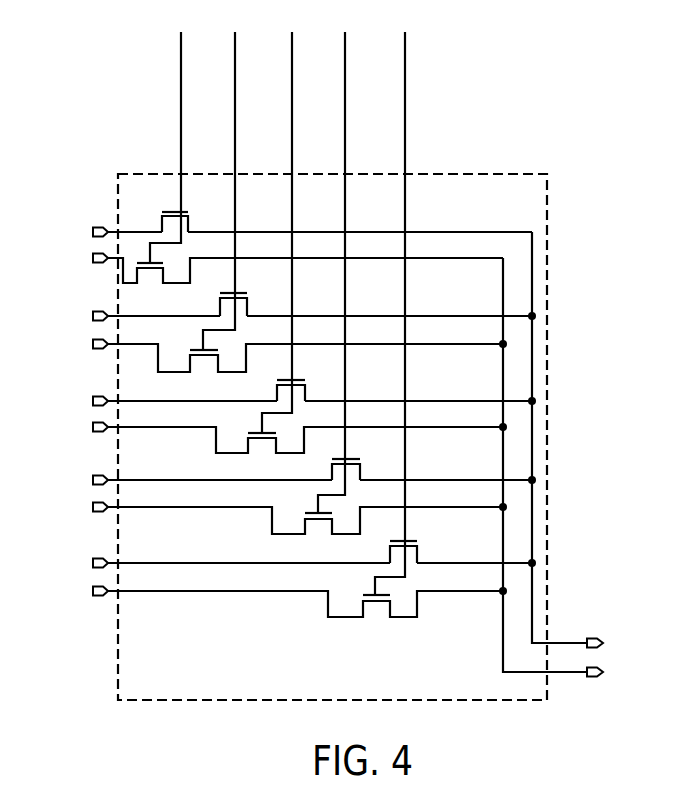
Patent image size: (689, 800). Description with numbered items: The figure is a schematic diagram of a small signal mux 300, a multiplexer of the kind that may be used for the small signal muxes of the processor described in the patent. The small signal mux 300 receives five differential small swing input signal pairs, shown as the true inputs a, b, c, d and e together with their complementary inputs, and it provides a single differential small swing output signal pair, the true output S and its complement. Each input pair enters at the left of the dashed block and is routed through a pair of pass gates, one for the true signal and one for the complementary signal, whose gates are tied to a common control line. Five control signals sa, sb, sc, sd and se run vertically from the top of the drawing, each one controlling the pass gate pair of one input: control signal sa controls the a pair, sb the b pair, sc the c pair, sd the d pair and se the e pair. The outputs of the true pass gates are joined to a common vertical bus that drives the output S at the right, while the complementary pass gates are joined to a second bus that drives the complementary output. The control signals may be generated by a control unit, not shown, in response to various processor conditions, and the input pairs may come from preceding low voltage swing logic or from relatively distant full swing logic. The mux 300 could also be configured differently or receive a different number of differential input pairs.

The small signal mux 300 is at (390, 688).
The control signal sa is at (164, 133).
The control signal sb is at (218, 177).
The control signal sc is at (277, 218).
The control signal sd is at (333, 258).
The control signal se is at (391, 299).
The differential small swing input signal a is at (298, 229).
The differential small swing input signal b is at (298, 312).
The differential small swing input signal c is at (298, 398).
The differential small swing input signal d is at (298, 478).
The differential small swing input signal e is at (298, 560).
The differential small swing output signal S is at (565, 440).